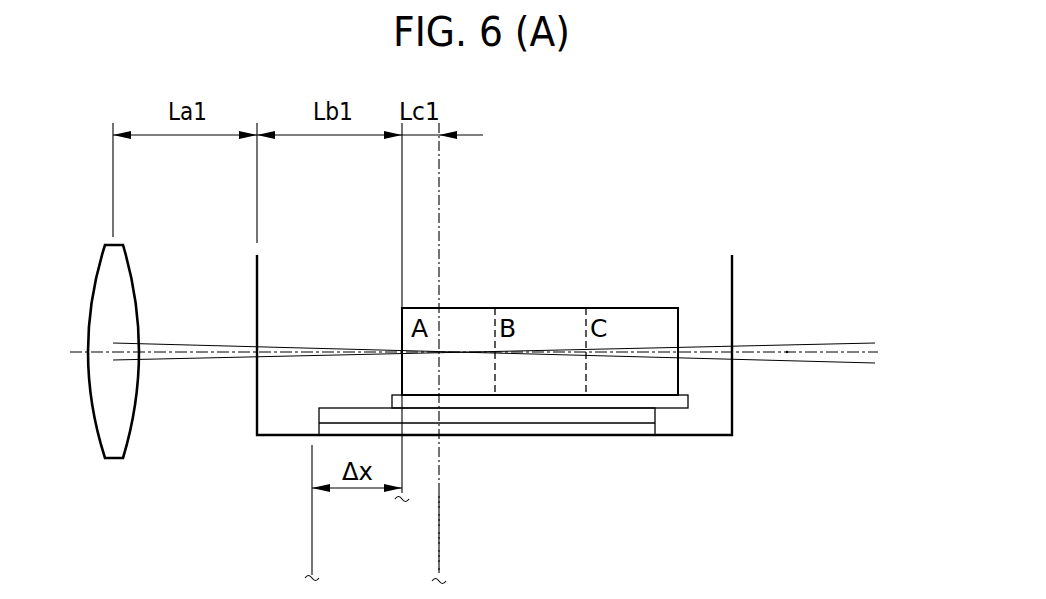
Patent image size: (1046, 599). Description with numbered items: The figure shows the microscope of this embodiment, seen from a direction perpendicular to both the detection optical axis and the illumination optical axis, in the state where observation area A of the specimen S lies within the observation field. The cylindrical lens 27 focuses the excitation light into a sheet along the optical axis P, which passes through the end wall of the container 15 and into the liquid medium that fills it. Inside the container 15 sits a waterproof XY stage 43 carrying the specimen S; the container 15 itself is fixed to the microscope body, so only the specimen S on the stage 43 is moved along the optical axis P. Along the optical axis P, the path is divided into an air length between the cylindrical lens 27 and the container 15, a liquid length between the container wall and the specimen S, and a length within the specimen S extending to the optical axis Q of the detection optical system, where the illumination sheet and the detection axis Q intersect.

The cylindrical lens 27 is at (111, 460).
The container 15 is at (678, 437).
The waterproof XY stage 43 is at (365, 376).
The specimen S is at (534, 308).
The optical axis P is at (787, 355).
The optical axis of the detection optical system Q is at (438, 562).